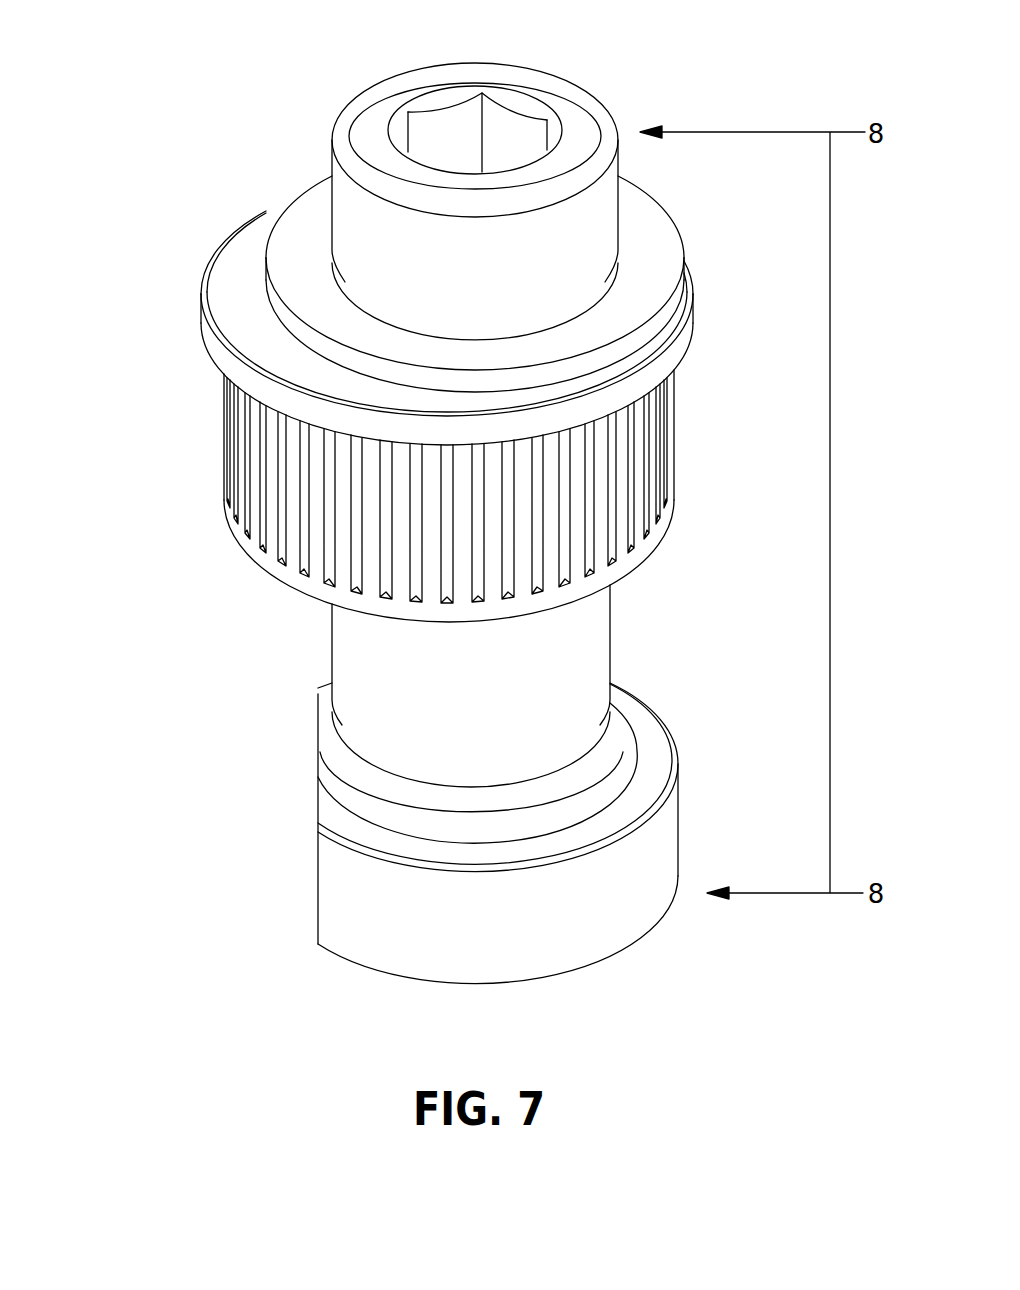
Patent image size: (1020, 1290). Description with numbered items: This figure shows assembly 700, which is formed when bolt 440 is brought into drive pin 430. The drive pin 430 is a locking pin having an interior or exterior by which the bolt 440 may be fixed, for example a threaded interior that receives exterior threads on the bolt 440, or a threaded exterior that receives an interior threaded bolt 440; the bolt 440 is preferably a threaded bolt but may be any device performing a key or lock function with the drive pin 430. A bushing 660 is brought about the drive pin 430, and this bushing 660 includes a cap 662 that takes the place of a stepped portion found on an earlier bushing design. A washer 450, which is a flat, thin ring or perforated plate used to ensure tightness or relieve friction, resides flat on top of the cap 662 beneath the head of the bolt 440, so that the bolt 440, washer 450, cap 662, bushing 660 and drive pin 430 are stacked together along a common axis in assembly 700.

The assembly 700 is at (406, 496).
The bolt 440 is at (340, 111).
The washer 450 is at (268, 250).
The cap 662 is at (683, 342).
The bushing 660 is at (190, 413).
The drive pin 430 is at (328, 658).